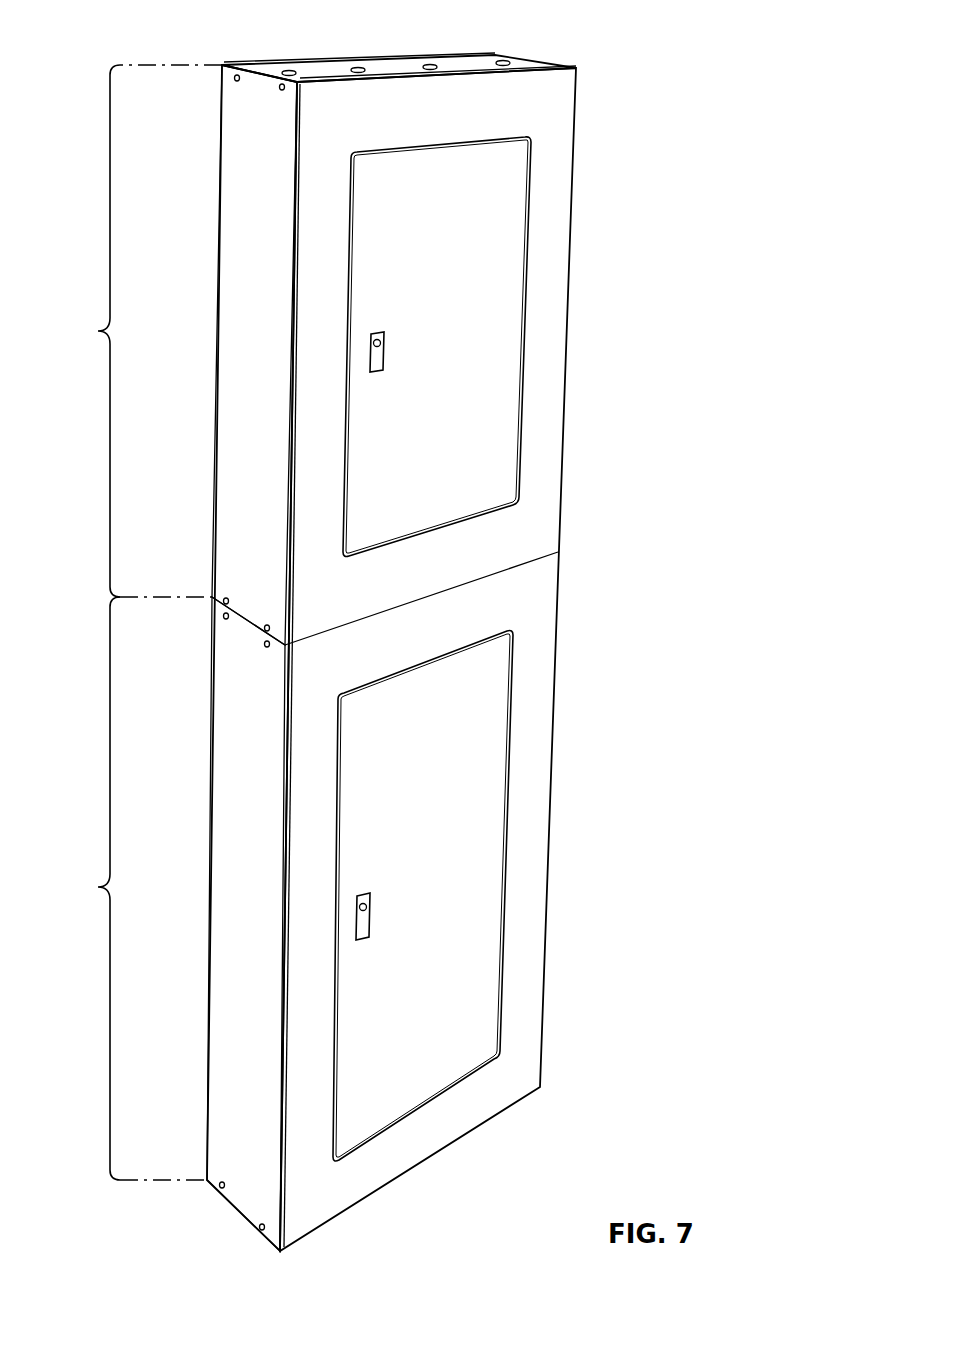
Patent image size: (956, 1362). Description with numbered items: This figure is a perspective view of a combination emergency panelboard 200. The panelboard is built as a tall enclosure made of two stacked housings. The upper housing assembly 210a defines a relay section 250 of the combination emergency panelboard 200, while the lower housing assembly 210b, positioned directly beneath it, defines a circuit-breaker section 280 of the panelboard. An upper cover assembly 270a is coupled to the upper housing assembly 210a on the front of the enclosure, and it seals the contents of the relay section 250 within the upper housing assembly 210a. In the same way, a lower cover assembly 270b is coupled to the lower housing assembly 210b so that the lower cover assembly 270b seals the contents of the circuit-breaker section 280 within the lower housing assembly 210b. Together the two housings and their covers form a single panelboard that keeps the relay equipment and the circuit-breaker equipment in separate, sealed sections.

The combination emergency panelboard 200 is at (593, 59).
The upper housing assembly 210a is at (225, 245).
The lower housing assembly 210b is at (220, 890).
The relay section 250 is at (138, 331).
The circuit-breaker section 280 is at (130, 888).
The upper cover assembly 270a is at (557, 312).
The lower cover assembly 270b is at (537, 846).